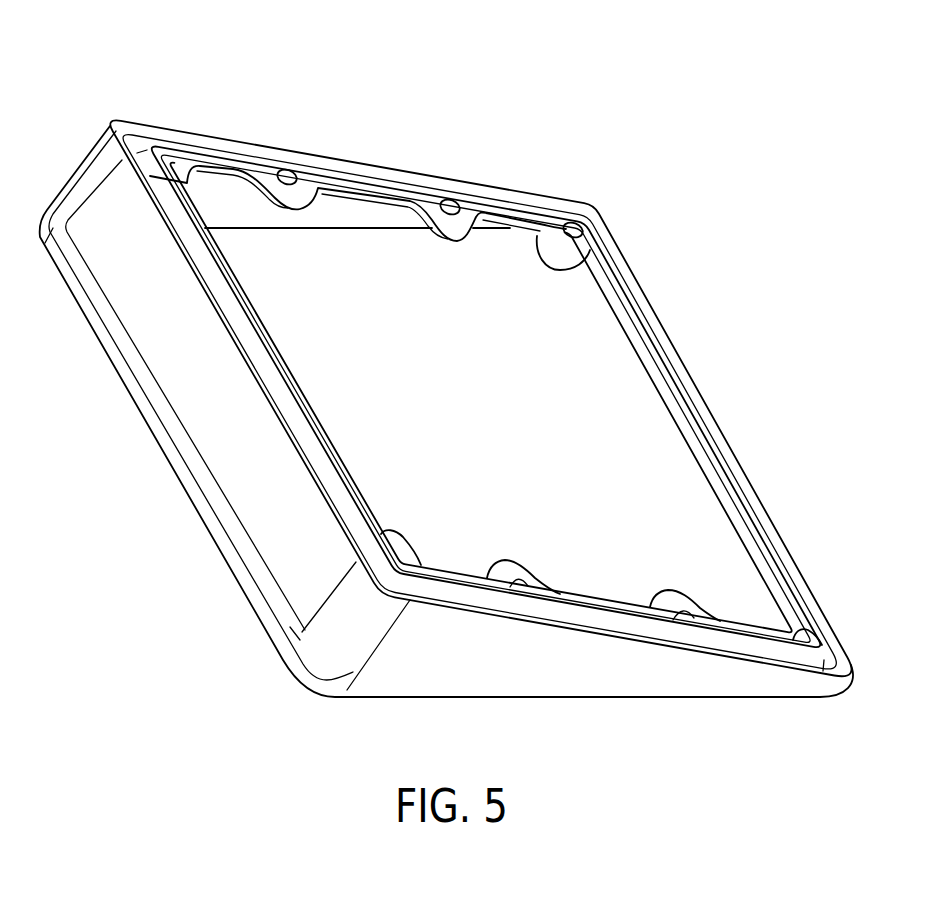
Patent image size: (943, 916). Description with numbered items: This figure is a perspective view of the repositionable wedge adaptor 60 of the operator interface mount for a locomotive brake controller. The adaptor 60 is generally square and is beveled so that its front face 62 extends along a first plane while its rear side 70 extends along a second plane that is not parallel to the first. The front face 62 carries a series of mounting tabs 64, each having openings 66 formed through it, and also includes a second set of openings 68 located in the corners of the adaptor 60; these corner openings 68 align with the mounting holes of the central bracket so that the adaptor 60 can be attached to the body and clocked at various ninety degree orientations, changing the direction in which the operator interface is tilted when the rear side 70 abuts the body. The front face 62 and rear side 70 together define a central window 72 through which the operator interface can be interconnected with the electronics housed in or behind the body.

The wedge adaptor 60 is at (366, 76).
The front face 62 is at (644, 295).
The mounting tabs 64 is at (470, 210).
The openings 66 is at (443, 198).
The second set of openings 68 is at (581, 220).
The rear side 70 is at (228, 570).
The central window 72 is at (590, 382).